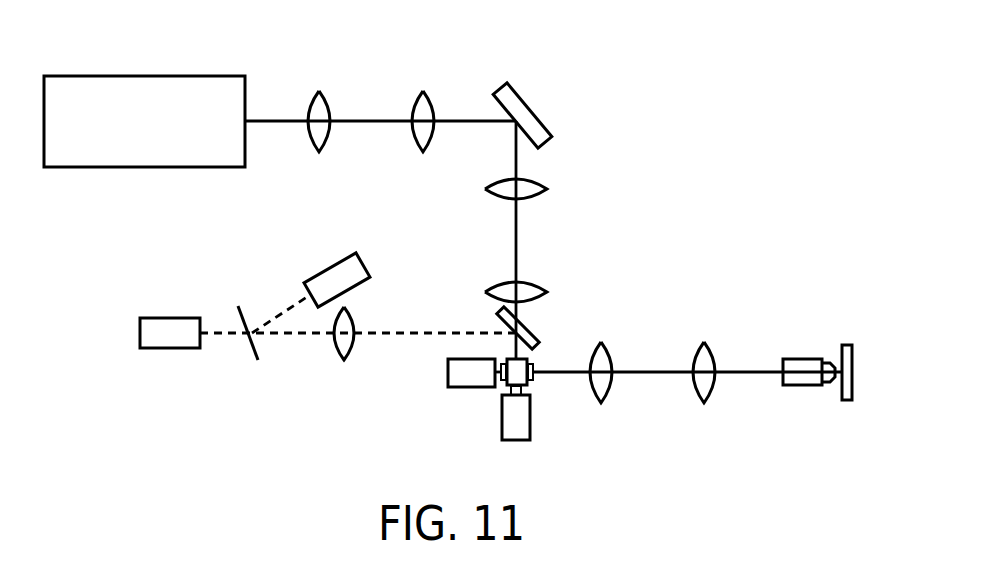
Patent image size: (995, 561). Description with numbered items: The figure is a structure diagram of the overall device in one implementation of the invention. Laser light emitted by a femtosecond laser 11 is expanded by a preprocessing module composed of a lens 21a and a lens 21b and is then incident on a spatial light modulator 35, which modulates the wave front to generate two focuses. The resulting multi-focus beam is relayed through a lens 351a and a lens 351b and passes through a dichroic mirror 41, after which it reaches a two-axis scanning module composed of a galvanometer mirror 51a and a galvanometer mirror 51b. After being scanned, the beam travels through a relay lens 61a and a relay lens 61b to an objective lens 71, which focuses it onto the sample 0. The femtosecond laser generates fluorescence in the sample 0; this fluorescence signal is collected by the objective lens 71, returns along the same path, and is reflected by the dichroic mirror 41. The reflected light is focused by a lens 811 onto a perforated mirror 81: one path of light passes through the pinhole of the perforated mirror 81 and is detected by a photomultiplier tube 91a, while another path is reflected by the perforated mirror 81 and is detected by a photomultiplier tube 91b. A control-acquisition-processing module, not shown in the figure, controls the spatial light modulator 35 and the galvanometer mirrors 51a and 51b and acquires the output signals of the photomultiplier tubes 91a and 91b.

The femtosecond laser 11 is at (150, 76).
The lens 21a is at (323, 89).
The lens 21b is at (430, 89).
The spatial light modulator 35 is at (537, 110).
The lens 351a is at (548, 193).
The lens 351b is at (548, 291).
The dichroic mirror 41 is at (538, 344).
The galvanometer mirror 51a is at (448, 380).
The galvanometer mirror 51b is at (502, 428).
The relay lens 61a is at (598, 405).
The relay lens 61b is at (701, 405).
The objective lens 71 is at (793, 386).
The sample 0 is at (846, 401).
The photomultiplier tube 91a is at (140, 334).
The photomultiplier tube 91b is at (370, 269).
The perforated mirror 81 is at (257, 360).
The lens 811 is at (340, 360).